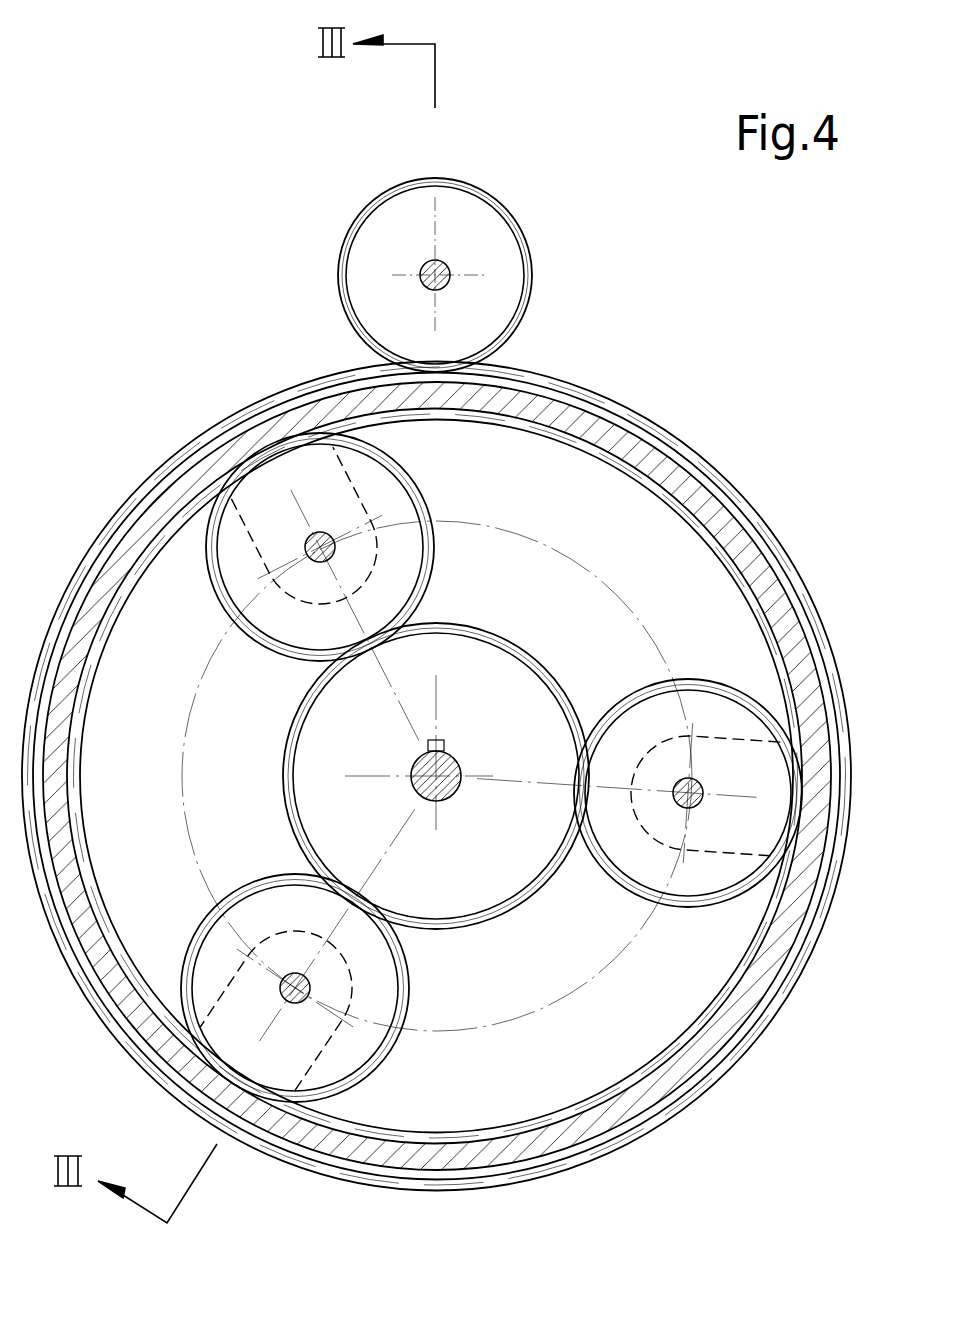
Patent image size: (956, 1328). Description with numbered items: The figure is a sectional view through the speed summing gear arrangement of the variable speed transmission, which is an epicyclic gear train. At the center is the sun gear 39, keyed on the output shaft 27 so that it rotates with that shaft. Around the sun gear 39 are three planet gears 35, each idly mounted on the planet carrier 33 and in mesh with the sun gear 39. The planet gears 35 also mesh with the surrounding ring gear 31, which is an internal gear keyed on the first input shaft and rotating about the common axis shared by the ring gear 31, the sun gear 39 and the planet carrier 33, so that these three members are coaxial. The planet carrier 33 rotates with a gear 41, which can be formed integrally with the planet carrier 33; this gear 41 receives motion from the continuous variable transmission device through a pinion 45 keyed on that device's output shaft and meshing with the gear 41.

The output shaft 27 is at (447, 790).
The ring gear 31 is at (703, 510).
The planet carrier 33 is at (222, 590).
The planet gear 35 is at (397, 495).
The sun gear 39 is at (467, 895).
The gear 41 is at (610, 407).
The pinion 45 is at (478, 225).